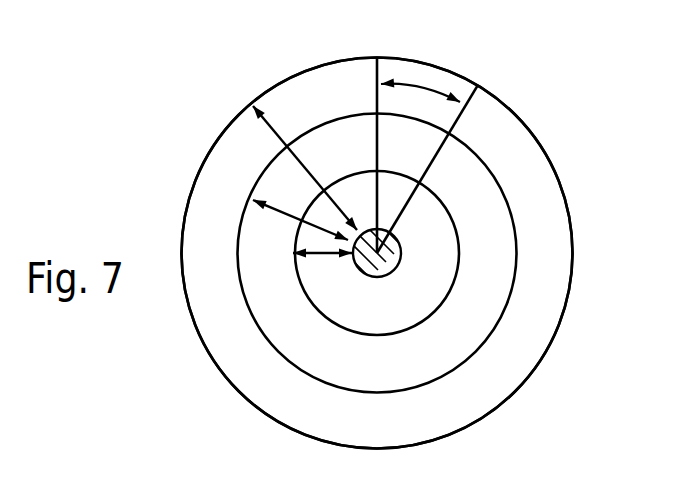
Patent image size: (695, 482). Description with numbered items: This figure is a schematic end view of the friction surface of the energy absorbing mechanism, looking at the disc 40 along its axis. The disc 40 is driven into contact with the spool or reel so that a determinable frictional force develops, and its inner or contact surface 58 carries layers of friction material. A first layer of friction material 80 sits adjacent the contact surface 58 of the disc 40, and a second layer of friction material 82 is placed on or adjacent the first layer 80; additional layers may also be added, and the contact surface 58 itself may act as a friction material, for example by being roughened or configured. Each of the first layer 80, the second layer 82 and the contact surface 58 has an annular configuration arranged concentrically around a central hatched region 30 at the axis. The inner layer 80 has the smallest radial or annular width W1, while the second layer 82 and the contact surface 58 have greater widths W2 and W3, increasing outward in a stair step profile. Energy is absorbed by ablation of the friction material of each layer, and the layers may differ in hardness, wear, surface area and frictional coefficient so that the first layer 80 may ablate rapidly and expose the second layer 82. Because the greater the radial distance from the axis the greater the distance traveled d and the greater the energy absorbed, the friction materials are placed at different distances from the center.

The core shaft 30 is at (372, 273).
The disc 40 is at (548, 356).
The contact surface 58 is at (493, 127).
The first layer of friction material 80 is at (440, 288).
The second layer of friction material 82 is at (490, 210).
The distance traveled d is at (422, 87).
The radial or annular width of the first layer W1 is at (322, 258).
The radial or annular width of the second layer W2 is at (290, 217).
The radial or annular width of the contact surface W3 is at (277, 136).